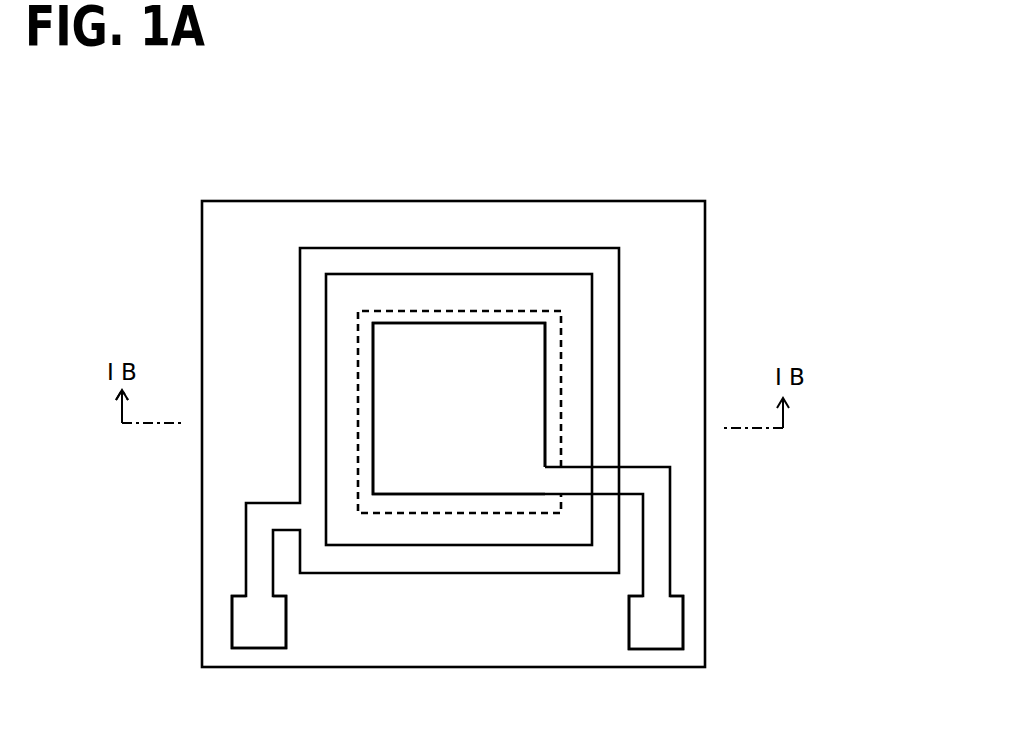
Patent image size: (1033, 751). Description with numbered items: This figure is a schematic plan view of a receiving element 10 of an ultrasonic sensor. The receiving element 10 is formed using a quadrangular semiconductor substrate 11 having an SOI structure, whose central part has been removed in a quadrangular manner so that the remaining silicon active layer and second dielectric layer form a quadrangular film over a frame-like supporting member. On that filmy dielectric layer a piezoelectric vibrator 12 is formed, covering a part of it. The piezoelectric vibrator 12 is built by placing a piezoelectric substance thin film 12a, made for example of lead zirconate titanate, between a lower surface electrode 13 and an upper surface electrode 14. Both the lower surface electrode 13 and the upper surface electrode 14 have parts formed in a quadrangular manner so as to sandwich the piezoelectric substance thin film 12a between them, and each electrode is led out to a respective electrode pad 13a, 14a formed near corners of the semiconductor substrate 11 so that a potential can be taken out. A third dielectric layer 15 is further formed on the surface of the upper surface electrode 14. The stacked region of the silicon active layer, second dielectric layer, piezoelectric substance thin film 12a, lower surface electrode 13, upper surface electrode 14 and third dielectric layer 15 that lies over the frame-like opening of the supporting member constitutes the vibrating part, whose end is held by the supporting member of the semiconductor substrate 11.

The receiving element 10 is at (689, 166).
The semiconductor substrate 11 is at (685, 475).
The piezoelectric vibrator 12 is at (392, 573).
The piezoelectric substance thin film 12a is at (478, 529).
The lower surface electrode 13 is at (318, 264).
The electrode pad 13a is at (263, 632).
The upper surface electrode 14 is at (660, 542).
The electrode pad 14a is at (660, 622).
The third dielectric layer 15 is at (507, 392).